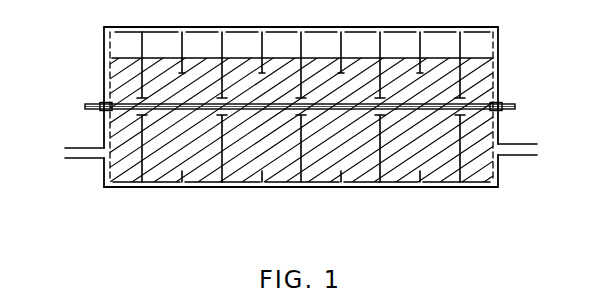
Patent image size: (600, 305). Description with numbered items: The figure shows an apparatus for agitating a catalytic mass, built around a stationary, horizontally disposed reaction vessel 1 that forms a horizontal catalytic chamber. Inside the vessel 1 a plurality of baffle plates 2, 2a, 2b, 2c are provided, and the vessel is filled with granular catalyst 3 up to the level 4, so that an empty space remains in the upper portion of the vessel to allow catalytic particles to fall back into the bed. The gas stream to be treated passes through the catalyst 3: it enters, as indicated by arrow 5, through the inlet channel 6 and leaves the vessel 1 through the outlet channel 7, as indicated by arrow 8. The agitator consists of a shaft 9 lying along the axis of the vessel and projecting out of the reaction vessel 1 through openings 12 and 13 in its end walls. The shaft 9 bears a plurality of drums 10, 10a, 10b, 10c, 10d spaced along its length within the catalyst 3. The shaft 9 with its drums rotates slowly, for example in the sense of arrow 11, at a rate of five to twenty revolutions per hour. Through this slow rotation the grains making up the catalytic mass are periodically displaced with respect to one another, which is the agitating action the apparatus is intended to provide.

The reaction vessel 1 is at (500, 28).
The baffle plate 2 is at (182, 30).
The baffle plate 2a is at (262, 30).
The baffle plate 2b is at (341, 30).
The baffle plate 2c is at (420, 28).
The catalyst 3 is at (158, 72).
The level 4 is at (118, 58).
The arrow 5 is at (540, 150).
The inlet channel 6 is at (523, 157).
The outlet channel 7 is at (87, 160).
The arrow 8 is at (65, 154).
The shaft 9 is at (516, 104).
The drum 10 is at (162, 183).
The drum 10a is at (245, 183).
The drum 10b is at (325, 183).
The drum 10c is at (403, 183).
The drum 10d is at (483, 183).
The arrow 11 is at (83, 122).
The opening 12 is at (100, 99).
The opening 13 is at (508, 101).